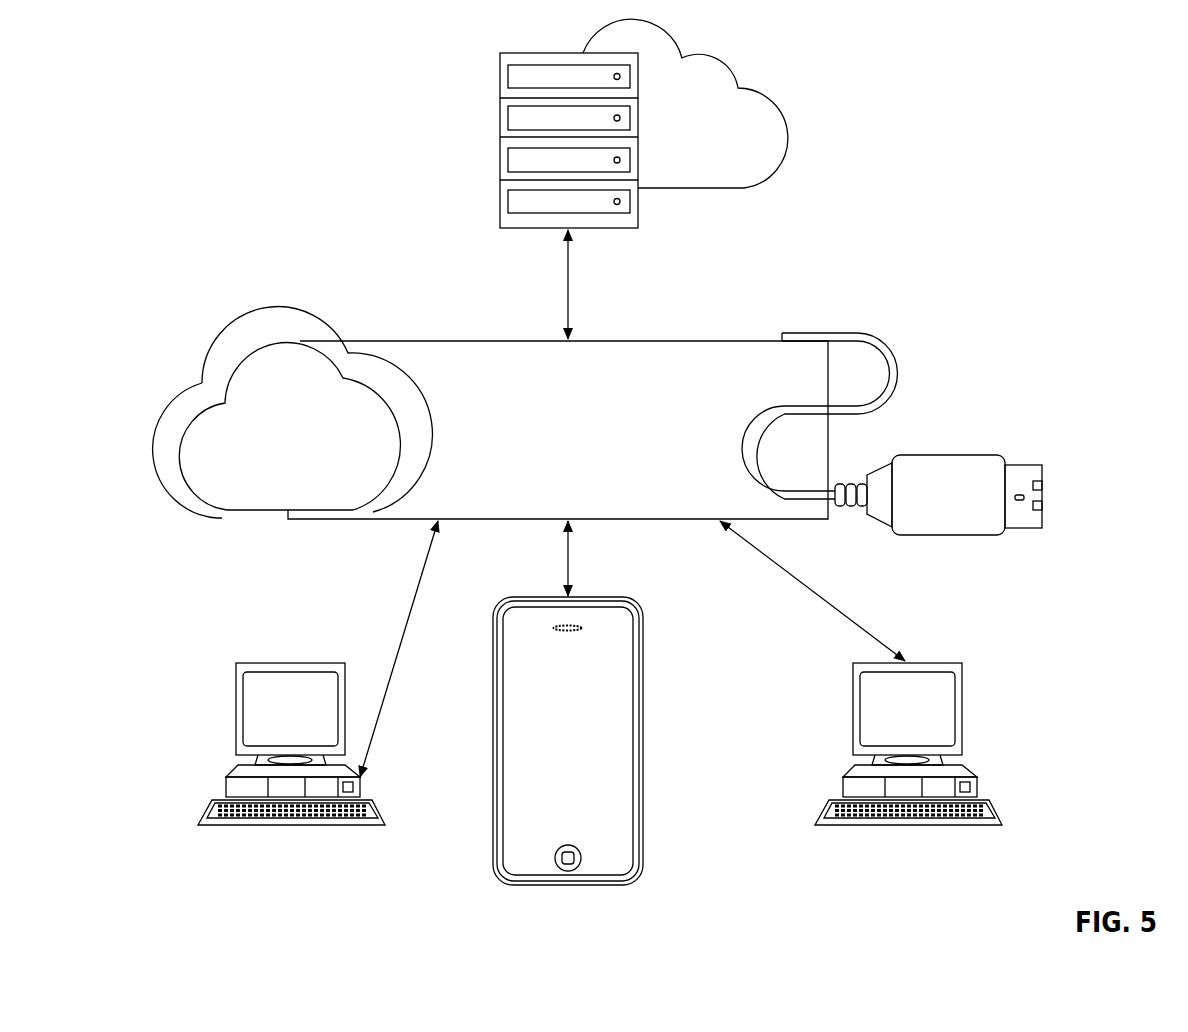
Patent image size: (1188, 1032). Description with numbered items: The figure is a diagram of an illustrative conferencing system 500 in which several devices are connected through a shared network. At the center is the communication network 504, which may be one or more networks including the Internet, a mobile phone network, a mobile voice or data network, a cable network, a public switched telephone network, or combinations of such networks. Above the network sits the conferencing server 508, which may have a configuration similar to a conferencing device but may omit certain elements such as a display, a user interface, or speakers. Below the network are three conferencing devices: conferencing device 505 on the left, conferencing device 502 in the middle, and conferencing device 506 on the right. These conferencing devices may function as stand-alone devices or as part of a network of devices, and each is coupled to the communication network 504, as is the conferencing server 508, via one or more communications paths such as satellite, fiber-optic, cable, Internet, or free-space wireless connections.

The system 500 is at (240, 56).
The conferencing device 502 is at (493, 775).
The communication network 504 is at (460, 341).
The conferencing device 505 is at (237, 715).
The conferencing device 506 is at (854, 715).
The conferencing server 508 is at (540, 52).